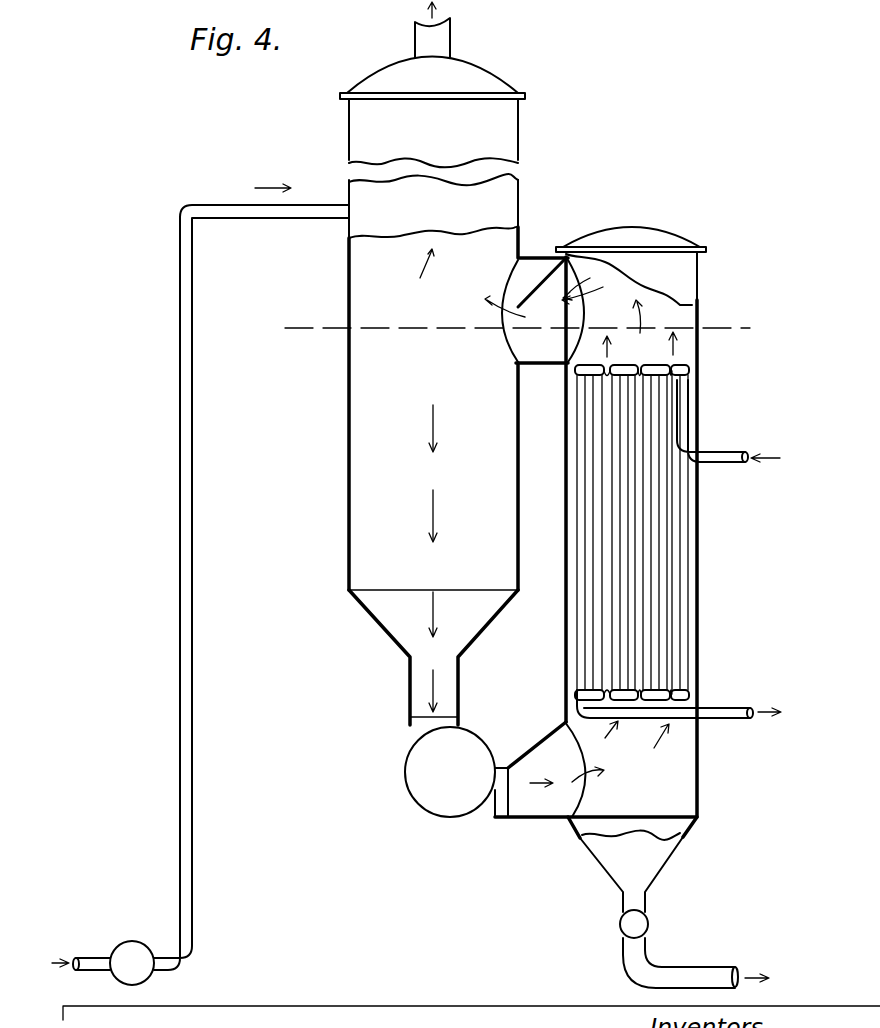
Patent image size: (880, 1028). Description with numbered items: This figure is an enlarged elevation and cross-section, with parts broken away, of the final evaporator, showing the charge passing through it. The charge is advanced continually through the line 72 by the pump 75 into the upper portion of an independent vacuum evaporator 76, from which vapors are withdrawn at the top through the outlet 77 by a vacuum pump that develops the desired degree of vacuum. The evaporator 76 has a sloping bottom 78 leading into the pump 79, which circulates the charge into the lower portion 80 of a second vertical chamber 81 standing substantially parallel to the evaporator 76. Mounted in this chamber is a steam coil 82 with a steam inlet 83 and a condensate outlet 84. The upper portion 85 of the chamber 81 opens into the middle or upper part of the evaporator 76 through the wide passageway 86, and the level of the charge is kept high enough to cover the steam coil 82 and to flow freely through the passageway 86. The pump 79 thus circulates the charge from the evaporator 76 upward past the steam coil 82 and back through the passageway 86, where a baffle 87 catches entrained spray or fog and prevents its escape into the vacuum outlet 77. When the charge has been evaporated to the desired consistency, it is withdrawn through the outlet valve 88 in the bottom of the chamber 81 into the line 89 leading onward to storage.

The line 72 is at (88, 958).
The pump 75 is at (135, 946).
The vacuum evaporator 76 is at (360, 128).
The outlet 77 is at (448, 48).
The sloping bottom 78 is at (382, 628).
The pump 79 is at (417, 782).
The lower portion 80 is at (590, 800).
The second vertical chamber 81 is at (566, 632).
The steam coil 82 is at (690, 528).
The inlet 83 is at (722, 455).
The condensate outlet 84 is at (735, 706).
The upper portion 85 is at (688, 318).
The passageway 86 is at (537, 265).
The baffle 87 is at (536, 283).
The outlet valve 88 is at (619, 922).
The line 89 is at (690, 968).